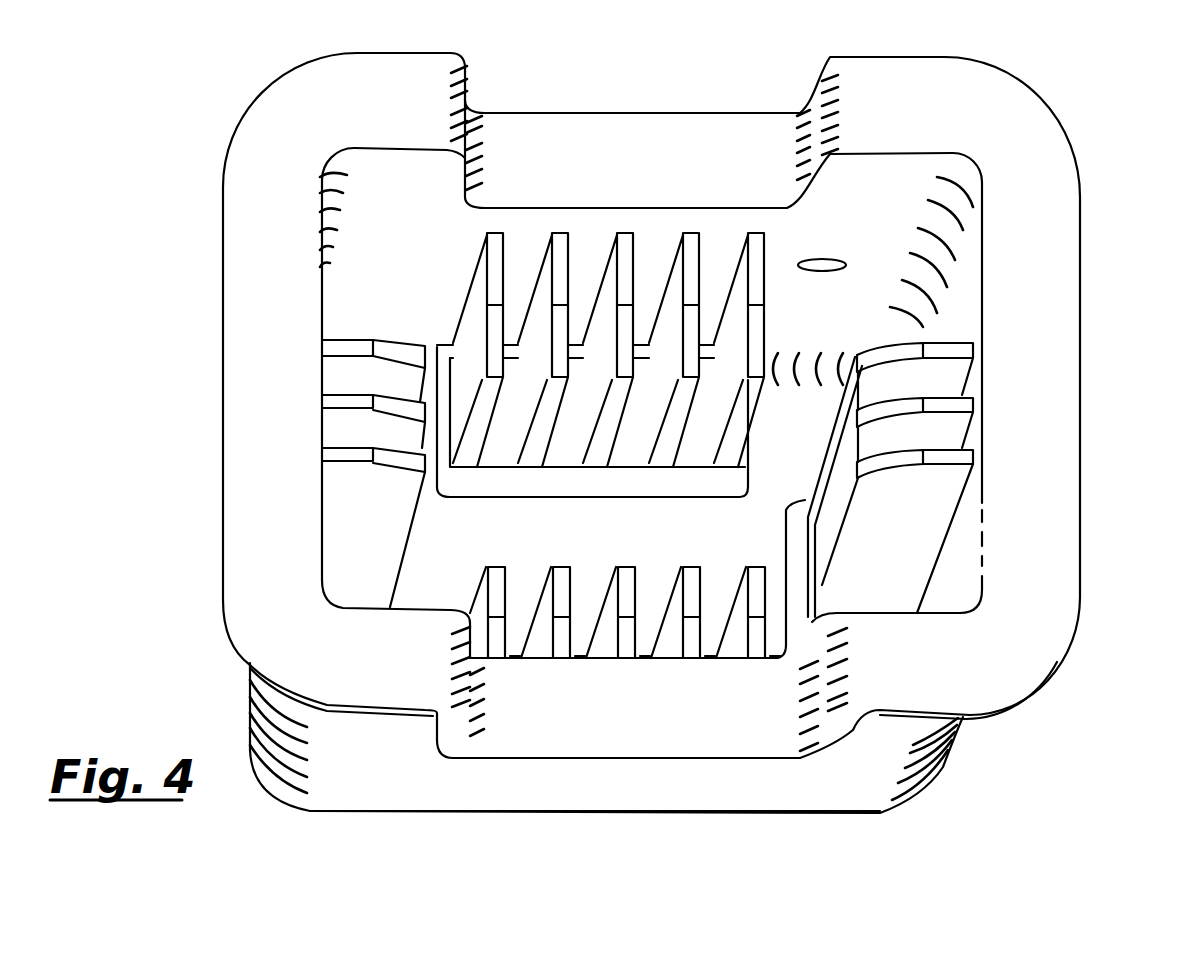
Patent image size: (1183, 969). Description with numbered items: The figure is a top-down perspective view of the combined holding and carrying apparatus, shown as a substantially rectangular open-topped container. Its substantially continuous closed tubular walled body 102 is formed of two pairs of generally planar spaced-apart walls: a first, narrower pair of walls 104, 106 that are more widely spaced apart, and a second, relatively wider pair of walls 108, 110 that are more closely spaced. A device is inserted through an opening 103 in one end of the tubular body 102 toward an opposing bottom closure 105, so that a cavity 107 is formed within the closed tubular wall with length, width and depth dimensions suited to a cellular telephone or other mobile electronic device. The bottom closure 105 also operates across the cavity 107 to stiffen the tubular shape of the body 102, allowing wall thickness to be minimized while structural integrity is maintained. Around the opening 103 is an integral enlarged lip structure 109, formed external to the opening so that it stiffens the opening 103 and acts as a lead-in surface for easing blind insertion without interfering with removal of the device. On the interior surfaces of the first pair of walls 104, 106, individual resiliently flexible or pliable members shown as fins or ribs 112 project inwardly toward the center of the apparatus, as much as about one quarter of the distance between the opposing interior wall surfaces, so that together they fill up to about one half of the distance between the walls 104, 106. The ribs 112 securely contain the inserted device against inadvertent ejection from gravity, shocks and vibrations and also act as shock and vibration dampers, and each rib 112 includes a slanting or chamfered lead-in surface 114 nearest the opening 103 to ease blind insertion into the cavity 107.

The tubular walled body 102 is at (443, 813).
The opening 103 is at (322, 533).
The first pair wall 104 is at (248, 681).
The bottom closure 105 is at (625, 542).
The first pair wall 106 is at (975, 560).
The cavity 107 is at (895, 205).
The second pair wall 108 is at (385, 781).
The enlarged lip structure 109 is at (268, 456).
The second pair wall 110 is at (857, 175).
The resiliently pliable rib 112 is at (473, 313).
The lead-in surface 114 is at (402, 348).